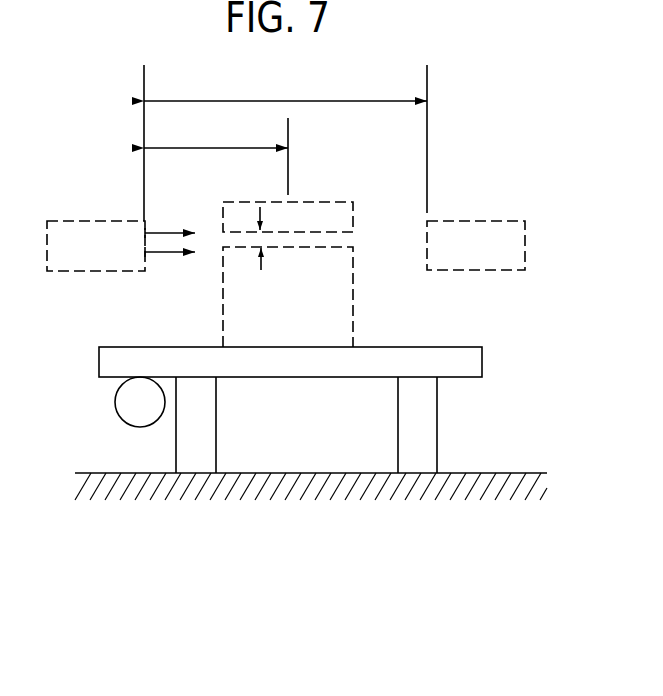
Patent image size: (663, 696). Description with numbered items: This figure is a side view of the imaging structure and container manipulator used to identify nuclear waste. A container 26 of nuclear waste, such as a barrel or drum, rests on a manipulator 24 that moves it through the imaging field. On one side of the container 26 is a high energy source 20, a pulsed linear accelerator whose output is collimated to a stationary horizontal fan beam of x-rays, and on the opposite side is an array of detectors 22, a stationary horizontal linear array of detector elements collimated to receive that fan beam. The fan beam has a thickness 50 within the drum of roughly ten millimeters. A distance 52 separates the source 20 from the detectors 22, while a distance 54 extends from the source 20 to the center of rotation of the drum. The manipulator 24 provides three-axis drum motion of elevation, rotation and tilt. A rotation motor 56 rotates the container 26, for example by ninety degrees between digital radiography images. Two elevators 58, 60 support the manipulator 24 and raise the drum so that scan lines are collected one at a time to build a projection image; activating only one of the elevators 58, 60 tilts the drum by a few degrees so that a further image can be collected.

The high energy source 20 is at (83, 218).
The array of detectors 22 is at (500, 218).
The manipulator 24 is at (500, 323).
The container 26 is at (335, 202).
The x-ray fan beam thickness 50 is at (262, 268).
The distance between source and detector 52 is at (280, 99).
The distance from source to drum center of rotation 54 is at (220, 147).
The rotation motor 56 is at (122, 402).
The elevator 58 is at (208, 433).
The elevator 60 is at (402, 428).